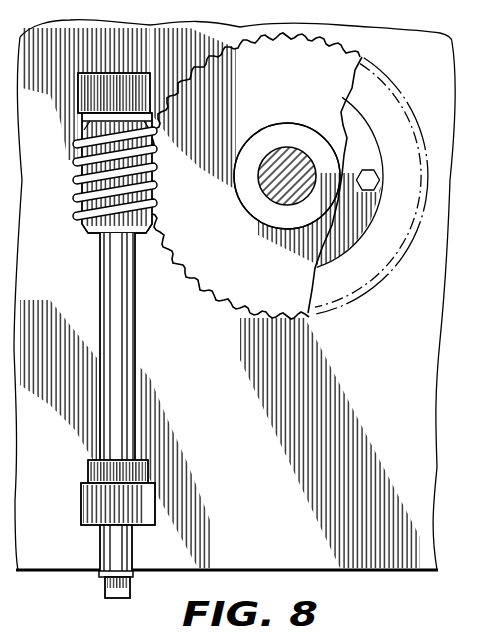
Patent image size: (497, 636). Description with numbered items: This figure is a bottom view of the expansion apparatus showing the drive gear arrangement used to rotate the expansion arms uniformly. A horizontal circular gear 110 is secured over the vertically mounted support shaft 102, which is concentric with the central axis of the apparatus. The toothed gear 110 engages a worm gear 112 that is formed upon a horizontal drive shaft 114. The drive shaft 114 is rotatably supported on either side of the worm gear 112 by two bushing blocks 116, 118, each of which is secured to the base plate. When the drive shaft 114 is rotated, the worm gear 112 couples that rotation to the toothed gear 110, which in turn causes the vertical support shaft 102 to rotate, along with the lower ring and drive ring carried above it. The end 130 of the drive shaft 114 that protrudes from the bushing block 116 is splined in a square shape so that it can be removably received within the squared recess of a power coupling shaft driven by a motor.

The support shaft 102 is at (283, 157).
The horizontal circular gear 110 is at (255, 318).
The worm gear 112 is at (78, 198).
The horizontal drive shaft 114 is at (137, 360).
The bushing block 116 is at (150, 502).
The bushing block 118 is at (80, 88).
The end of horizontal drive shaft 130 is at (103, 587).